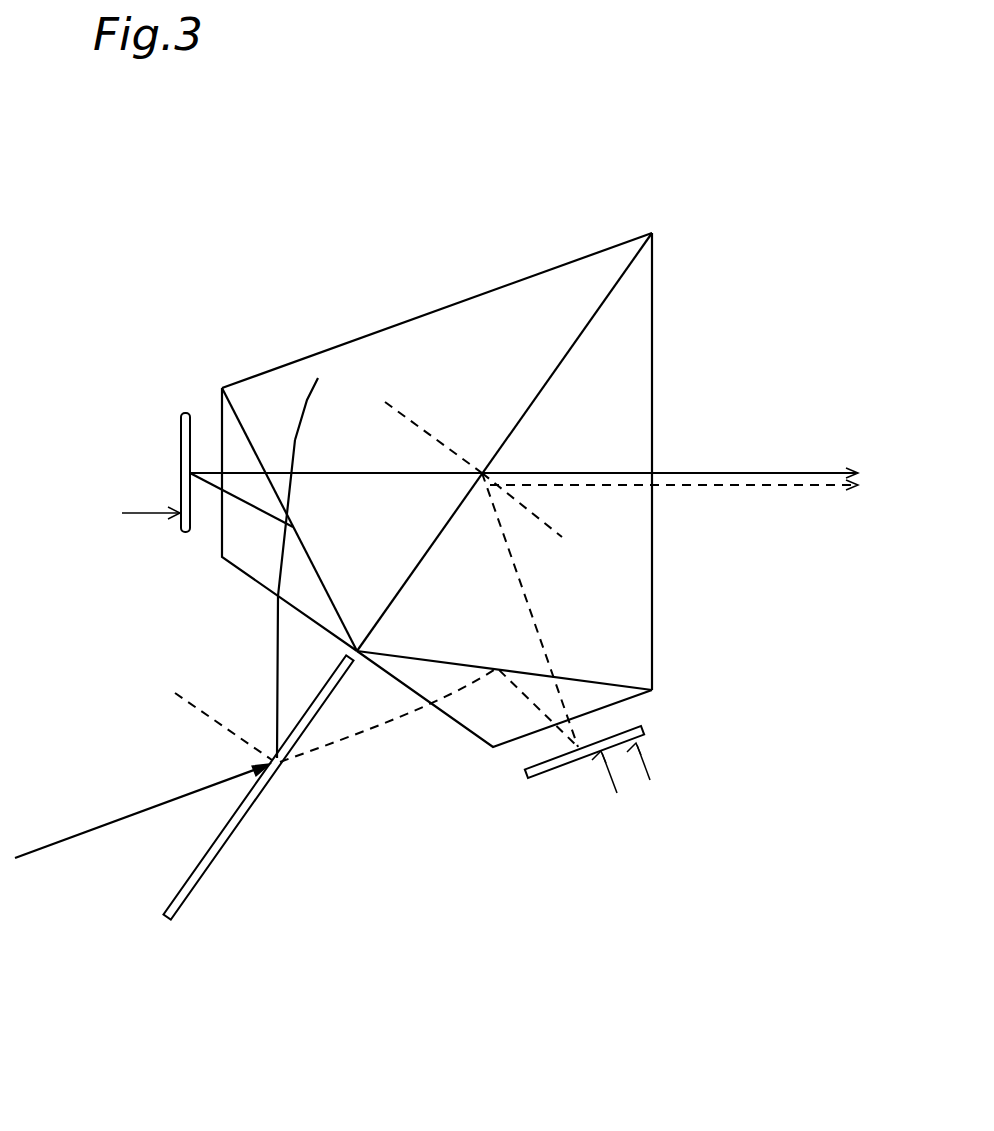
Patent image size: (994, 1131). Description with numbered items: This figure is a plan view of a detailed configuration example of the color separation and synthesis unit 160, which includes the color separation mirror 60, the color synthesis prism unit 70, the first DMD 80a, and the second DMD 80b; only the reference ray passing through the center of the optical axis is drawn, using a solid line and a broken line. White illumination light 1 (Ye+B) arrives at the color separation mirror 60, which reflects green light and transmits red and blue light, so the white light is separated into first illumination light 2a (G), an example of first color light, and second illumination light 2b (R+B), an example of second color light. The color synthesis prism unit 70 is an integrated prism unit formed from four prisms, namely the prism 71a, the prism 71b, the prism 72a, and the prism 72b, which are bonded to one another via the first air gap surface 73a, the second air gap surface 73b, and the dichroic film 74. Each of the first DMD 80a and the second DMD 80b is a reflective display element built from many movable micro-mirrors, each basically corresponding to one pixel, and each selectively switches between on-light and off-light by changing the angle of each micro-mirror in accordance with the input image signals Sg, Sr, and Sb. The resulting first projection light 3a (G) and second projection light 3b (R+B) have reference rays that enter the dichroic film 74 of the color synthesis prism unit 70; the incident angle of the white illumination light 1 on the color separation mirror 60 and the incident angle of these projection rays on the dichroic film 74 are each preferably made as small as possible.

The color separation and synthesis unit 160 is at (99, 197).
The color synthesis prism unit 70 is at (438, 308).
The prism 72a is at (533, 303).
The prism 72b is at (627, 375).
The first air gap surface 73a is at (235, 412).
The second air gap surface 73b is at (593, 680).
The dichroic film 74 is at (607, 298).
The prism 71a is at (228, 537).
The prism 71b is at (496, 725).
The first DMD 80a is at (180, 487).
The second DMD 80b is at (558, 762).
The color separation mirror 60 is at (207, 880).
The white illumination light 1 is at (87, 829).
The first illumination light 2a is at (277, 690).
The second illumination light 2b is at (332, 743).
The first projection light 3a is at (318, 378).
The second projection light 3b is at (518, 572).
The input image signal Sg is at (132, 514).
The input image signal Sr is at (612, 788).
The input image signal Sb is at (648, 780).